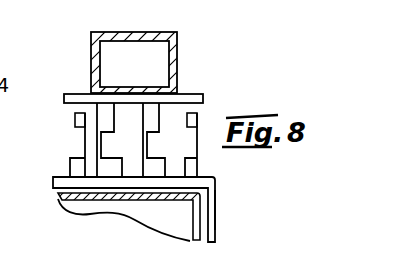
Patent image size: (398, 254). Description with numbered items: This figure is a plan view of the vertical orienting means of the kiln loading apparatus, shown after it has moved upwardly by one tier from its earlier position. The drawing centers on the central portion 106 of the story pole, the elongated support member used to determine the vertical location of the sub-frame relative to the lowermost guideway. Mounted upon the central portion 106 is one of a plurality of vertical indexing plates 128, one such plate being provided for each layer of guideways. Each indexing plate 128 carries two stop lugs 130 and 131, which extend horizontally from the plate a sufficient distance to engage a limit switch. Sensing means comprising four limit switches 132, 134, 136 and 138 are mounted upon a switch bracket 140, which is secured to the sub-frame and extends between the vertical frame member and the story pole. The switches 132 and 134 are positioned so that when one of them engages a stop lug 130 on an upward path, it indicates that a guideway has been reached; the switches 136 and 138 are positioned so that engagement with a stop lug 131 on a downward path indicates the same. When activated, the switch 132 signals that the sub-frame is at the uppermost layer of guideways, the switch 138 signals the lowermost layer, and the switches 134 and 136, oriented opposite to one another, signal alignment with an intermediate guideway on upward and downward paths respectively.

The central portion 106 is at (177, 40).
The vertical indexing plate 128 is at (204, 93).
The stop lug 130 is at (97, 111).
The stop lug 131 is at (158, 117).
The limit switch 132 is at (70, 165).
The limit switch 134 is at (107, 168).
The limit switch 136 is at (152, 170).
The limit switch 138 is at (197, 171).
The switch bracket 140 is at (217, 203).